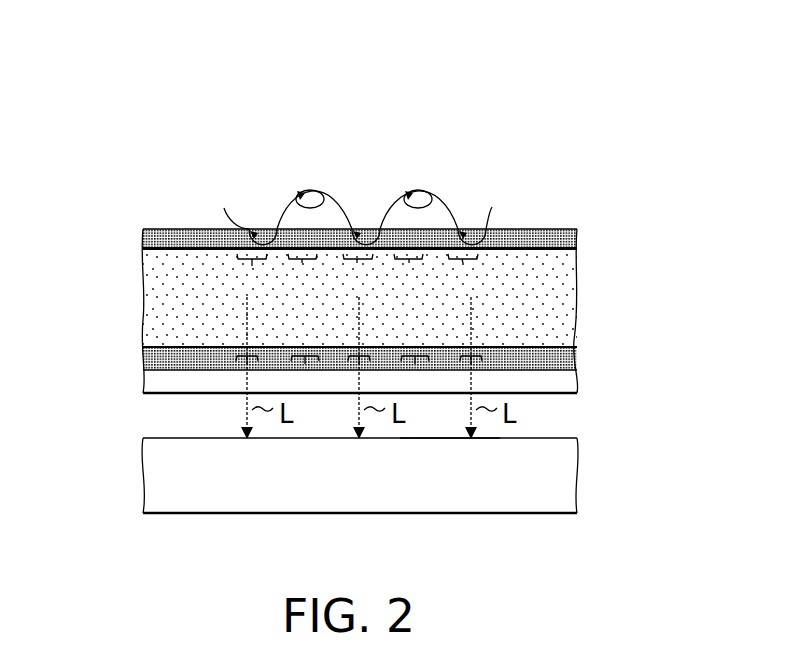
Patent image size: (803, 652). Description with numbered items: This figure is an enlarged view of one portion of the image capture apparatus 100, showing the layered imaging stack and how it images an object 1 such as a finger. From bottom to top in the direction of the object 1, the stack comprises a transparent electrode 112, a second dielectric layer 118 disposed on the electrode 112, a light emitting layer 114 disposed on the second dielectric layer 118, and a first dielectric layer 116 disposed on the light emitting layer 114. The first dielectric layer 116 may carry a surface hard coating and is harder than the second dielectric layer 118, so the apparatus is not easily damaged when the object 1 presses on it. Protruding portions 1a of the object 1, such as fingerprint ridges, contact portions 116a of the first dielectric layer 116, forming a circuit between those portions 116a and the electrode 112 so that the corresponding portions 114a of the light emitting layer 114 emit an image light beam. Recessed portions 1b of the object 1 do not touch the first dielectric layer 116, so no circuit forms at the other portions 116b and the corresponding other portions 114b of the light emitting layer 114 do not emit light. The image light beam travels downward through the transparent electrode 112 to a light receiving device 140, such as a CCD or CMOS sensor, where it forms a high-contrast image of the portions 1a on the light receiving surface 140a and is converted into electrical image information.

The object 1 is at (502, 98).
The portion of the object 1a is at (274, 238).
The another portion of the object 1b is at (333, 210).
The image capture apparatus 100 is at (706, 577).
The electrode 112 is at (562, 380).
The light emitting layer 114 is at (548, 330).
The portion of the light emitting layer 114a is at (247, 364).
The another portion of the light emitting layer 114b is at (305, 364).
The first dielectric layer 116 is at (570, 239).
The portion of the first dielectric layer 116a is at (252, 266).
The another portion of the first dielectric layer 116b is at (302, 263).
The second dielectric layer 118 is at (560, 362).
The light receiving device 140 is at (544, 481).
The light receiving surface 140a is at (549, 427).